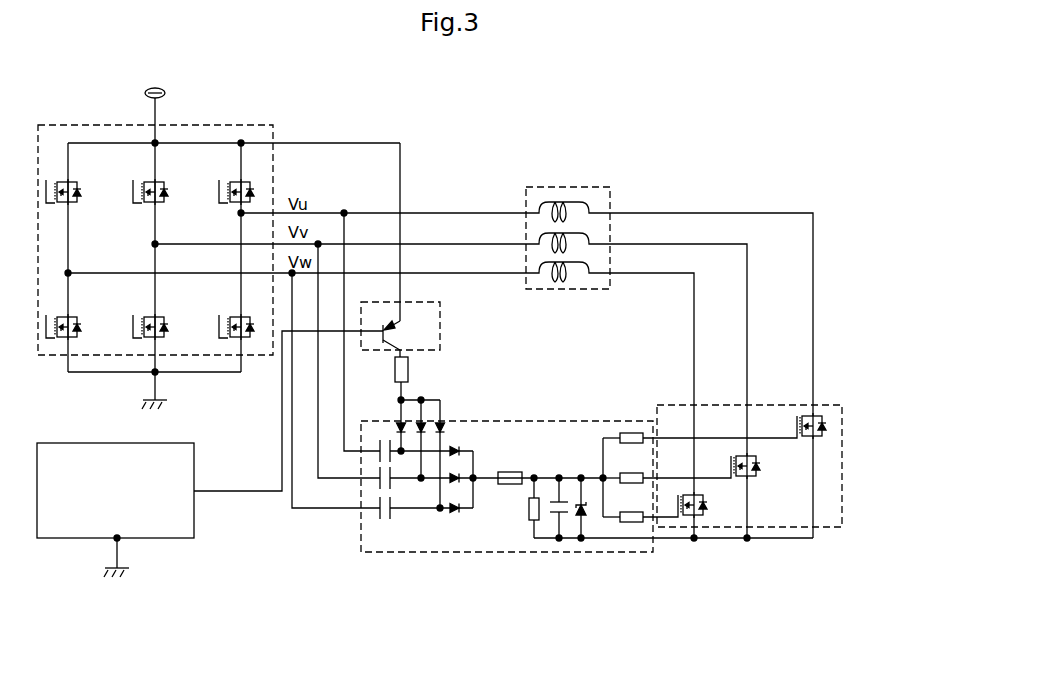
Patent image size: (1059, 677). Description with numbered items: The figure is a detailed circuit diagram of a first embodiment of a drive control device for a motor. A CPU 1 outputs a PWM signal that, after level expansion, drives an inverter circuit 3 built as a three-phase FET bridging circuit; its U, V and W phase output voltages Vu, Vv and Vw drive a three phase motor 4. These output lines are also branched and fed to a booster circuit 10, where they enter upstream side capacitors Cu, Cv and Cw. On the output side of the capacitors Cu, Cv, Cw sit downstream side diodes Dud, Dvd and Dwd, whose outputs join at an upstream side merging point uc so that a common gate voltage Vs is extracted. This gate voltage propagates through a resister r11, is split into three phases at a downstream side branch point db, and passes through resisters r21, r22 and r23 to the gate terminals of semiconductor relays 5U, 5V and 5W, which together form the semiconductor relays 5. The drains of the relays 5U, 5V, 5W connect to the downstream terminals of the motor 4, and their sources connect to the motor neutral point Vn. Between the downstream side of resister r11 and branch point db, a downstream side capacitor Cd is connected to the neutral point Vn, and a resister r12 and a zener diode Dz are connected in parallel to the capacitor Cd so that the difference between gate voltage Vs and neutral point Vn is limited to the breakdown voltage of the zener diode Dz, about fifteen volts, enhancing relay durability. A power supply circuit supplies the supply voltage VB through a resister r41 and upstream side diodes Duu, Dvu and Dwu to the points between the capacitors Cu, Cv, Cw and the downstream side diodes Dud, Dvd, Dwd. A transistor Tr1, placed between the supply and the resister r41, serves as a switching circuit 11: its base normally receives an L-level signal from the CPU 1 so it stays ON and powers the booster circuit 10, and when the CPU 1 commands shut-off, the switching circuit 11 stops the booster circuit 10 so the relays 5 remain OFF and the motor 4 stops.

The CPU 1 is at (162, 443).
The inverter circuit 3 is at (243, 125).
The three phase motor 4 is at (595, 187).
The semiconductor relays 5 is at (705, 473).
The booster circuit 10 is at (486, 462).
The switching circuit 11 is at (437, 250).
The U-phase semiconductor relay 5U is at (820, 440).
The V-phase semiconductor relay 5V is at (758, 478).
The W-phase semiconductor relay 5W is at (700, 518).
The transistor Tr1 is at (414, 250).
The resister r41 is at (407, 370).
The resister r11 is at (530, 470).
The resister r12 is at (531, 512).
The resister r21 is at (630, 433).
The resister r22 is at (638, 463).
The resister r23 is at (638, 505).
The upstream side capacitor Cu is at (382, 445).
The upstream side capacitor Cv is at (380, 475).
The upstream side capacitor Cw is at (380, 502).
The downstream side capacitor Cd is at (559, 500).
The zener diode Dz is at (584, 513).
The upstream side diode Duu is at (404, 427).
The upstream side diode Dvu is at (423, 428).
The upstream side diode Dwu is at (442, 428).
The downstream side diode Dud is at (457, 450).
The downstream side diode Dvd is at (457, 476).
The downstream side diode Dwd is at (457, 507).